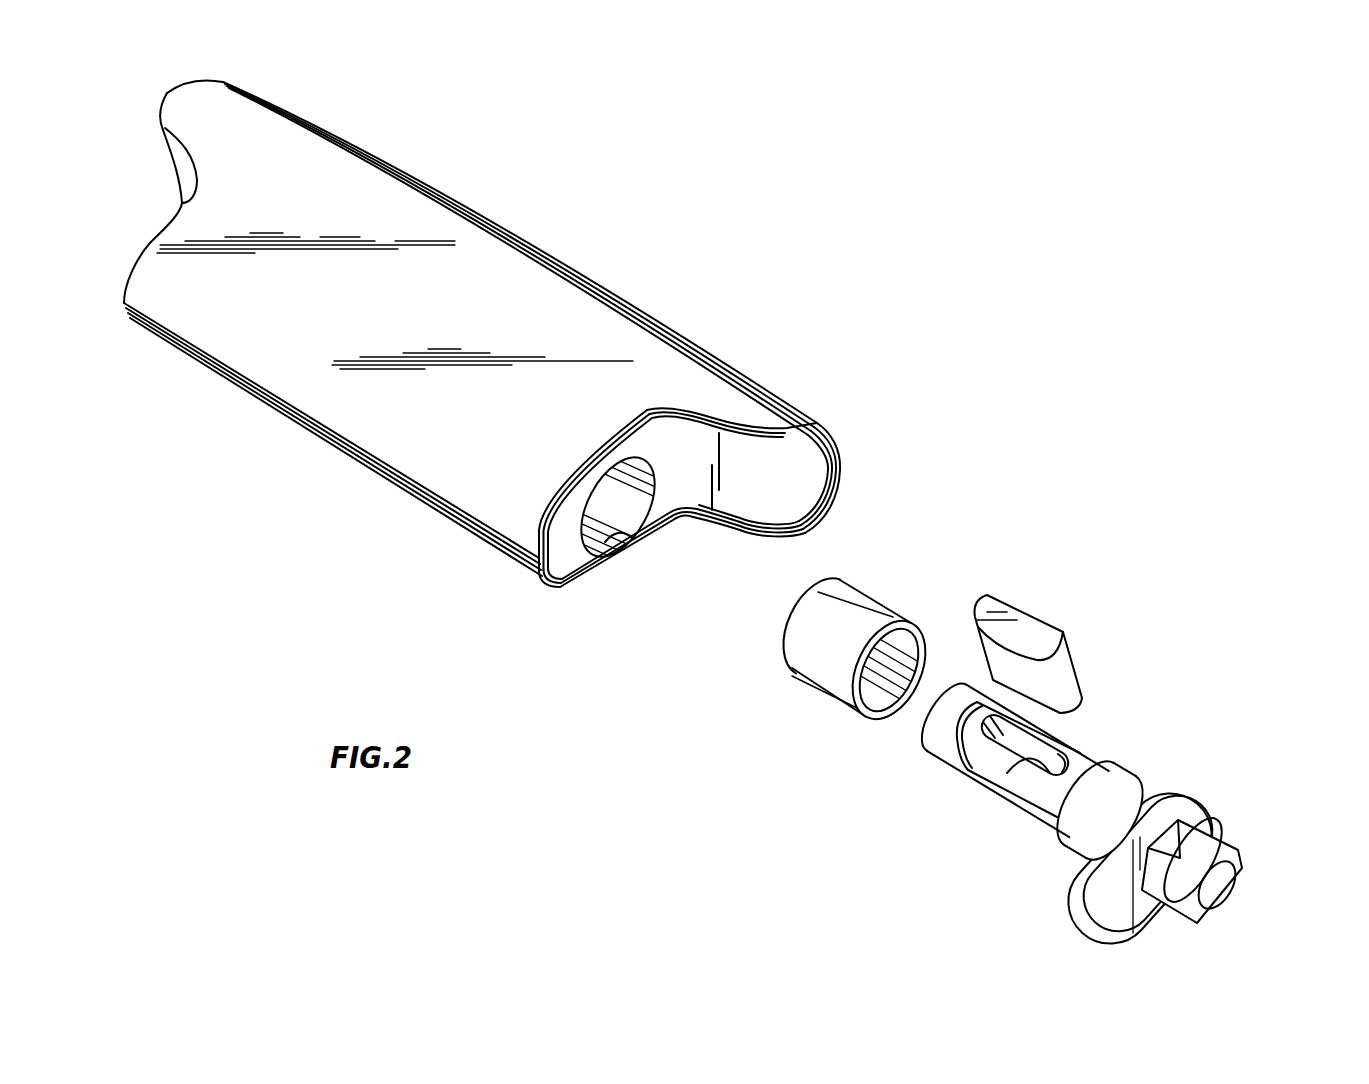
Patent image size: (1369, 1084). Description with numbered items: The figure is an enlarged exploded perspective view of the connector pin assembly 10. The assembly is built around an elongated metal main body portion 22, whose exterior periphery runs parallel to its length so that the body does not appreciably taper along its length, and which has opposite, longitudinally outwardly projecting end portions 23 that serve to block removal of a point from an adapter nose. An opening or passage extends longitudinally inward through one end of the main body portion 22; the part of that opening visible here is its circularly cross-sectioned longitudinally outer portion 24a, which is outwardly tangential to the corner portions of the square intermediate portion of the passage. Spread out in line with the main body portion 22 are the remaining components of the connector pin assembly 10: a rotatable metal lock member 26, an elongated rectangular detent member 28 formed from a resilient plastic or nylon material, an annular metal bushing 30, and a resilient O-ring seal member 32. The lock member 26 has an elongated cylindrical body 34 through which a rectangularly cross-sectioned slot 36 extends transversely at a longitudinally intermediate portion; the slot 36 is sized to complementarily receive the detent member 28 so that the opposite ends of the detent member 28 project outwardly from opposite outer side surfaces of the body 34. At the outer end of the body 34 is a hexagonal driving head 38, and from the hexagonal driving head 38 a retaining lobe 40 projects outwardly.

The connector pin assembly 10 is at (773, 200).
The main body portion 22 is at (405, 217).
The end portions 23 is at (167, 93).
The longitudinally outer portion 24a is at (630, 541).
The lock member 26 is at (1087, 747).
The detent member 28 is at (1040, 632).
The bushing 30 is at (897, 602).
The O-ring seal member 32 is at (1132, 777).
The cylindrical body 34 is at (942, 745).
The slot 36 is at (1033, 753).
The hexagonal driving head 38 is at (1222, 882).
The retaining lobe 40 is at (1080, 913).